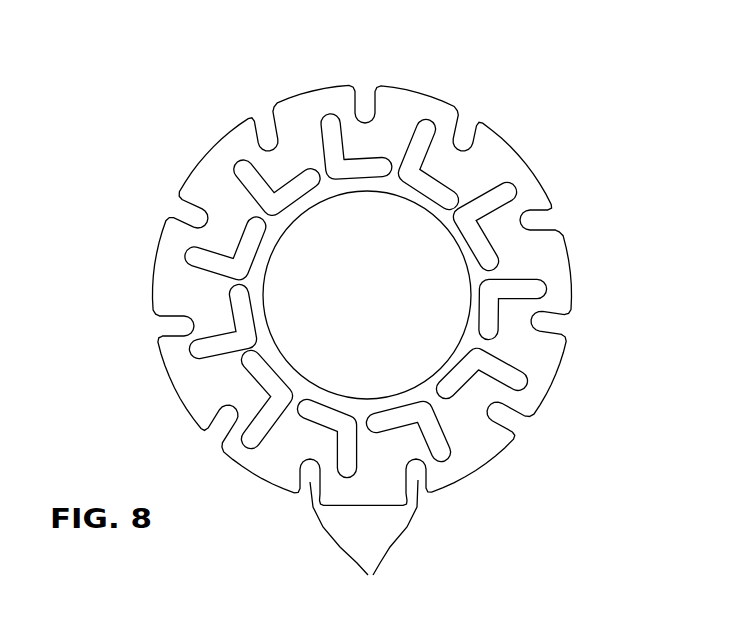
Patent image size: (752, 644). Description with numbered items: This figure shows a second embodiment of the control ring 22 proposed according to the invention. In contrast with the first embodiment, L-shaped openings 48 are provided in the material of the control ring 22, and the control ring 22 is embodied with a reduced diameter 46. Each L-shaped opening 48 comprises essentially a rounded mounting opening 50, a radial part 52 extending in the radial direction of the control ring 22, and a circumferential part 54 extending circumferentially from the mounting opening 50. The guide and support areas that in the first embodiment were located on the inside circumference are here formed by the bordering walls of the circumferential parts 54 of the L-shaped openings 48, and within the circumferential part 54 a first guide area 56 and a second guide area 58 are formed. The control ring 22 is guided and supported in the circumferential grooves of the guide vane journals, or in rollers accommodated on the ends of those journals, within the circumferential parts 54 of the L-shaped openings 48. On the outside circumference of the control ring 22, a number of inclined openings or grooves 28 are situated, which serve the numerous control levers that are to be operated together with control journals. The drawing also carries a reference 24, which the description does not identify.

The control ring 22 is at (494, 168).
The slot 24 is at (424, 158).
The inclined openings/grooves 28 is at (180, 328).
The reduced diameter 46 is at (454, 241).
The L-shaped openings 48 is at (553, 296).
The mounting opening 50 is at (336, 176).
The radial part 52 is at (331, 122).
The circumferential part 54 is at (388, 168).
The first guide area 56 is at (300, 170).
The second guide area 58 is at (300, 170).